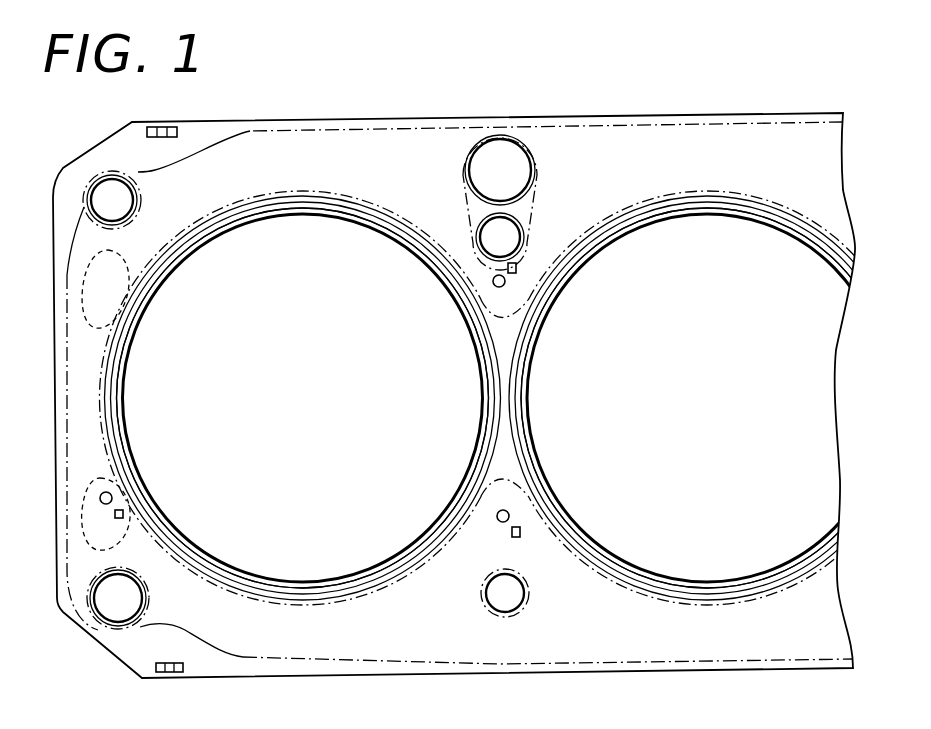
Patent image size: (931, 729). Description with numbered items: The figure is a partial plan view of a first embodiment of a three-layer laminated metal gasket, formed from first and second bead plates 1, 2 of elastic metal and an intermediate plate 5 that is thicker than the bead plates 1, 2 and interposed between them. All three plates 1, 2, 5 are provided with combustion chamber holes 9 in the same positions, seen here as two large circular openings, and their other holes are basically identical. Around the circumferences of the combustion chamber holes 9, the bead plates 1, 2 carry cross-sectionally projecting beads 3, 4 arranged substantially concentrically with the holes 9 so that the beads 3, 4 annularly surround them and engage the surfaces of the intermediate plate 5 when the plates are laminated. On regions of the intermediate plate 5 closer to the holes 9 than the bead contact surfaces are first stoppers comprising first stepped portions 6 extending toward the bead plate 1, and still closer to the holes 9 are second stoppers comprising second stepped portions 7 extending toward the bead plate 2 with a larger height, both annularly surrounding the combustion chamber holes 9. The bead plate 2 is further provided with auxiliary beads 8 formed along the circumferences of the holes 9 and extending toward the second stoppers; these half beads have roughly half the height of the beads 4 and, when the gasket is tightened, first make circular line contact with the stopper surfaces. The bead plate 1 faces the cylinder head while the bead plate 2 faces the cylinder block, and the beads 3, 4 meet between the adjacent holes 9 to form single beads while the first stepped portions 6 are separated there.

The first bead plate 1 is at (665, 628).
The second bead plate 2 is at (460, 425).
The beads 3 is at (288, 597).
The beads 4 is at (504, 398).
The intermediate plate 5 is at (445, 397).
The first stepped portions 6 is at (420, 543).
The second stepped portions 7 is at (505, 398).
The auxiliary beads 8 is at (470, 331).
The combustion chamber holes 9 is at (214, 238).